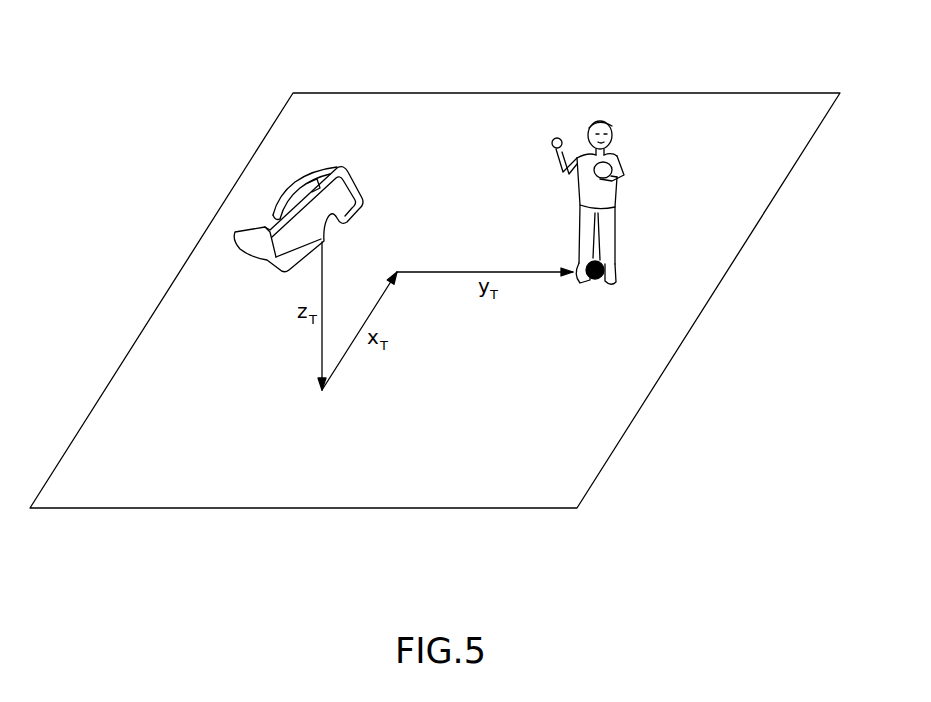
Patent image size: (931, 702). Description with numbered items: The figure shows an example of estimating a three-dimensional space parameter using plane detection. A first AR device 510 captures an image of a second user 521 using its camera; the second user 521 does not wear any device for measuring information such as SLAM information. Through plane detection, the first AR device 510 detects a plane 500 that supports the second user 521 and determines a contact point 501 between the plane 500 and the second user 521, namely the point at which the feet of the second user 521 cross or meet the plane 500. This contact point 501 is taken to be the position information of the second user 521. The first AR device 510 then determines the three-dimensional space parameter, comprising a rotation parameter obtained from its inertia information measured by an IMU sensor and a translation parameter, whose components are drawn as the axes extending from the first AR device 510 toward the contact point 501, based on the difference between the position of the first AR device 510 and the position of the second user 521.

The plane 500 is at (566, 92).
The first AR device 510 is at (353, 170).
The second user 521 is at (606, 190).
The contact point 501 is at (598, 281).